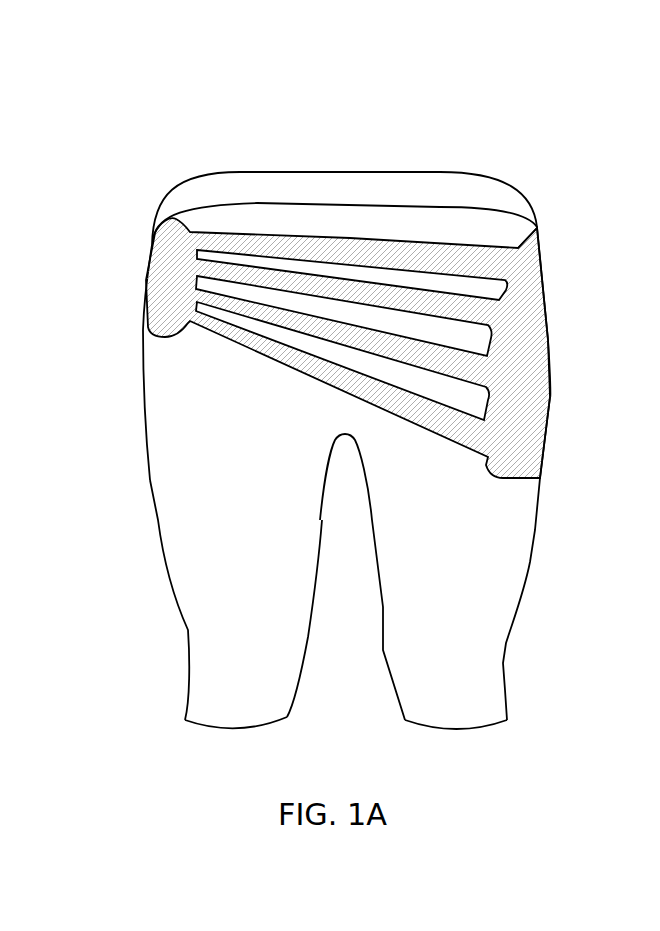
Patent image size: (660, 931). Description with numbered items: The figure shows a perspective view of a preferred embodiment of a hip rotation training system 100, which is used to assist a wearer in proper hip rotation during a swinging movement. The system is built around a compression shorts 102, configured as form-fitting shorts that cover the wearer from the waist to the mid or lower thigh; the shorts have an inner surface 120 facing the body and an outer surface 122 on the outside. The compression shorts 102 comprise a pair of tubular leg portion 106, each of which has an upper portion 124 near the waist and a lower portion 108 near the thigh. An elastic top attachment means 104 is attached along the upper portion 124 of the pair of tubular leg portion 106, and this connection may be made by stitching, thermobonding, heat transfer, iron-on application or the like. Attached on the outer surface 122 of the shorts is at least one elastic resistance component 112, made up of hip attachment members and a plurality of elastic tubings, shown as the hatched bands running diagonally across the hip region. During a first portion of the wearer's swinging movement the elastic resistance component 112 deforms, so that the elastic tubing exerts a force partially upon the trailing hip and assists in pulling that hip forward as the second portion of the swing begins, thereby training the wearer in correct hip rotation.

The hip rotation training system 100 is at (327, 100).
The compression shorts 102 is at (156, 362).
The elastic top attachment means 104 is at (463, 182).
The tubular leg portion 106 is at (210, 702).
The lower portion 108 is at (480, 550).
The elastic resistance component 112 is at (550, 321).
The inner surface 120 is at (382, 169).
The outer surface 122 is at (147, 452).
The upper portion 124 is at (512, 245).